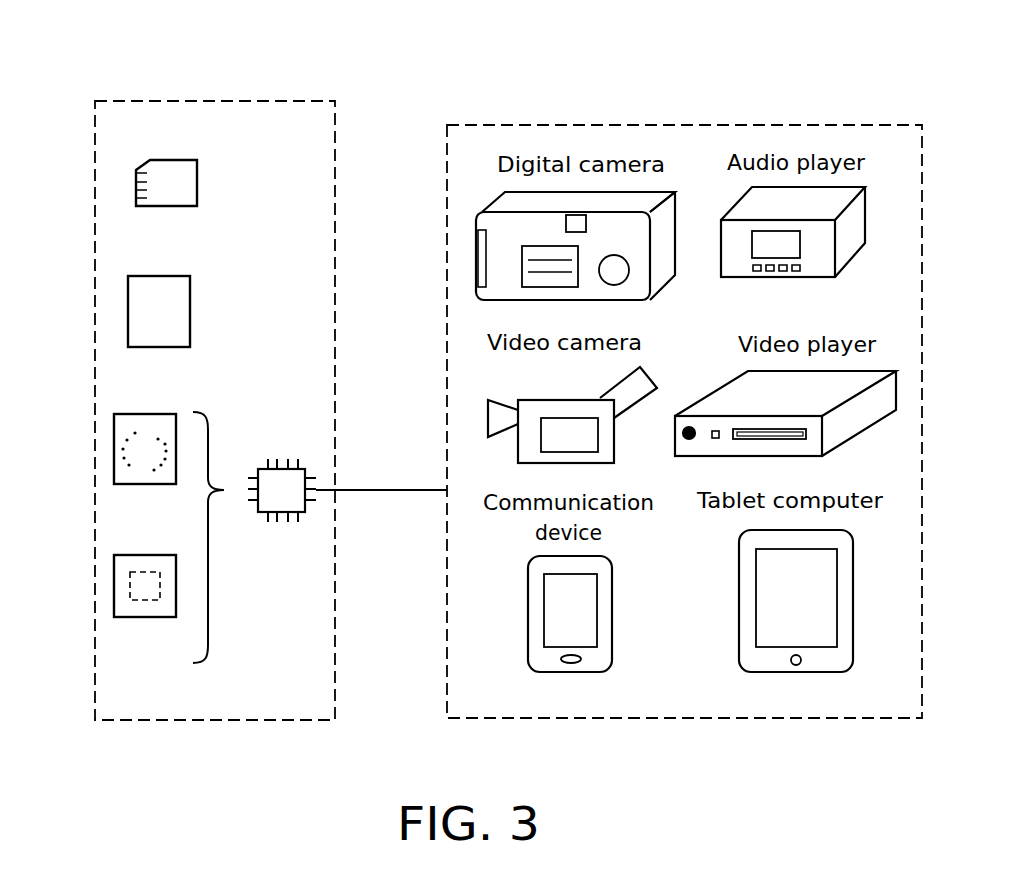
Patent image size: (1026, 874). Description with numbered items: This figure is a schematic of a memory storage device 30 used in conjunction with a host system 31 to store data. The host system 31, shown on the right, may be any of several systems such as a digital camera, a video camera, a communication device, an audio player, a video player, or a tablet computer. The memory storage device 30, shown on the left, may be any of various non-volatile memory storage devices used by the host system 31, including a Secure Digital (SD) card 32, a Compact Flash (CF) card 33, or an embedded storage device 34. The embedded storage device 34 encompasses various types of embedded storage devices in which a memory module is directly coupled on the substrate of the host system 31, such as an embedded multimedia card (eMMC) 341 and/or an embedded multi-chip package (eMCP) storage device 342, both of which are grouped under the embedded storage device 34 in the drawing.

The memory storage device 30 is at (203, 100).
The host system 31 is at (610, 122).
The Secure Digital (SD) card 32 is at (136, 190).
The Compact Flash (CF) card 33 is at (128, 313).
The embedded storage device 34 is at (283, 466).
The embedded multimedia card (eMMC) 341 is at (114, 452).
The embedded multi-chip package (eMCP) storage device 342 is at (114, 590).